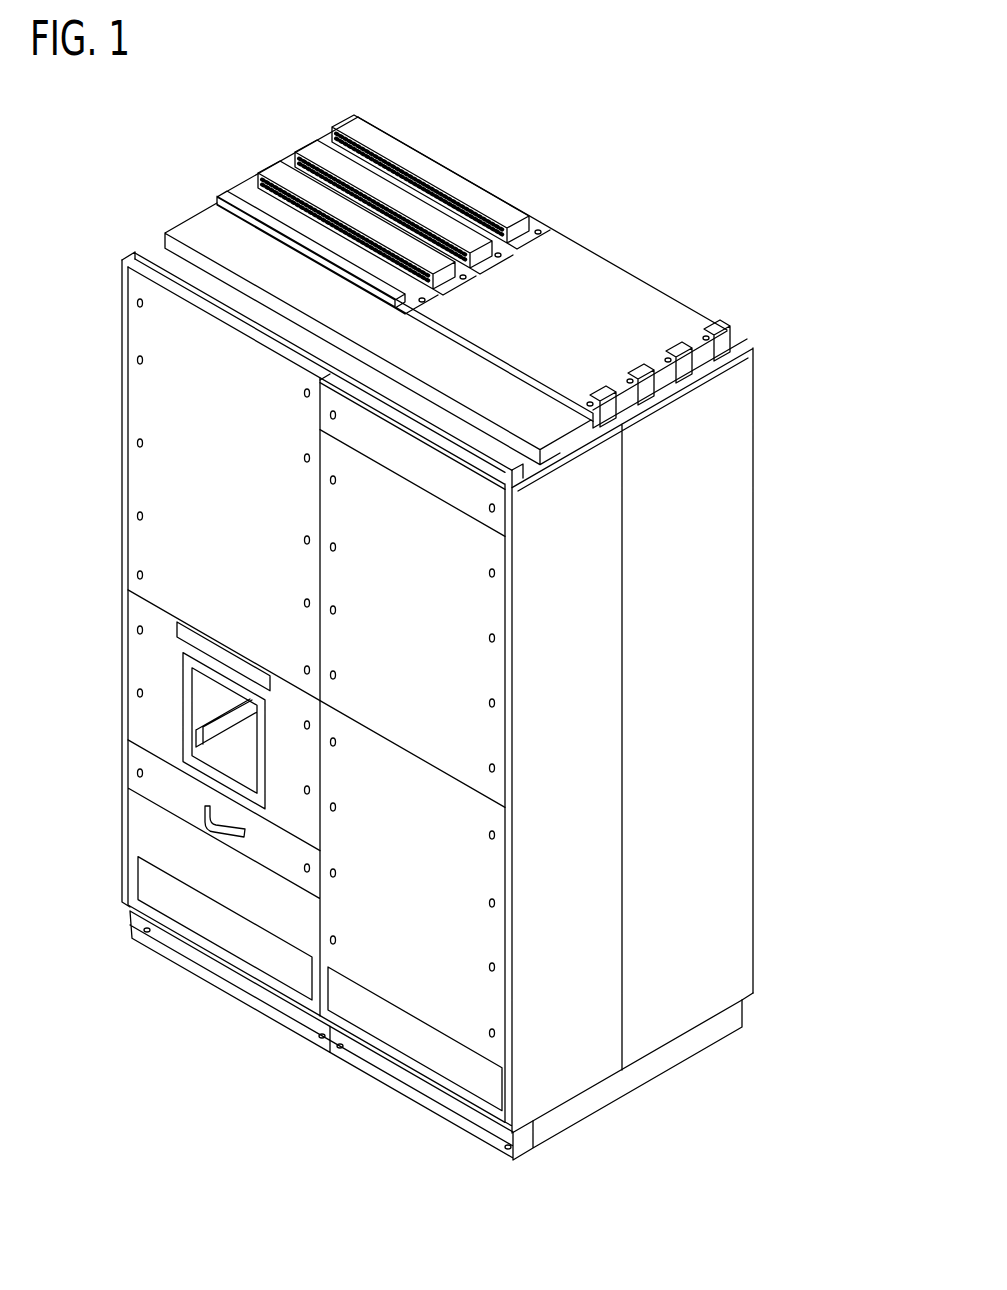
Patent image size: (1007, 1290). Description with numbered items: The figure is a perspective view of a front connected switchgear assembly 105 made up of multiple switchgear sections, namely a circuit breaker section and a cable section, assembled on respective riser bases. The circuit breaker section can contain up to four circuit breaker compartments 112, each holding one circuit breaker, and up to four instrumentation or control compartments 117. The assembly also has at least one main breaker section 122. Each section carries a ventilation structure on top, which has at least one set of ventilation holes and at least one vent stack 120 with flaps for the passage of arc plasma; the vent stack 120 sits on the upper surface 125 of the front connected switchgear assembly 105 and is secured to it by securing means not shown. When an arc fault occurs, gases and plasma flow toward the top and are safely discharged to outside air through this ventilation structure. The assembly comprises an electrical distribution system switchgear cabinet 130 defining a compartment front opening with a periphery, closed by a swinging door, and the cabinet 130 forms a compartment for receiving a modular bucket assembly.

The front connected switchgear assembly 105 is at (693, 143).
The circuit breaker compartment 112 is at (146, 658).
The instrumentation or control compartment 117 is at (155, 551).
The vent stack 120 is at (395, 142).
The main breaker section 122 is at (125, 707).
The upper surface 125 is at (148, 250).
The electrical distribution system switchgear cabinet 130 is at (718, 572).